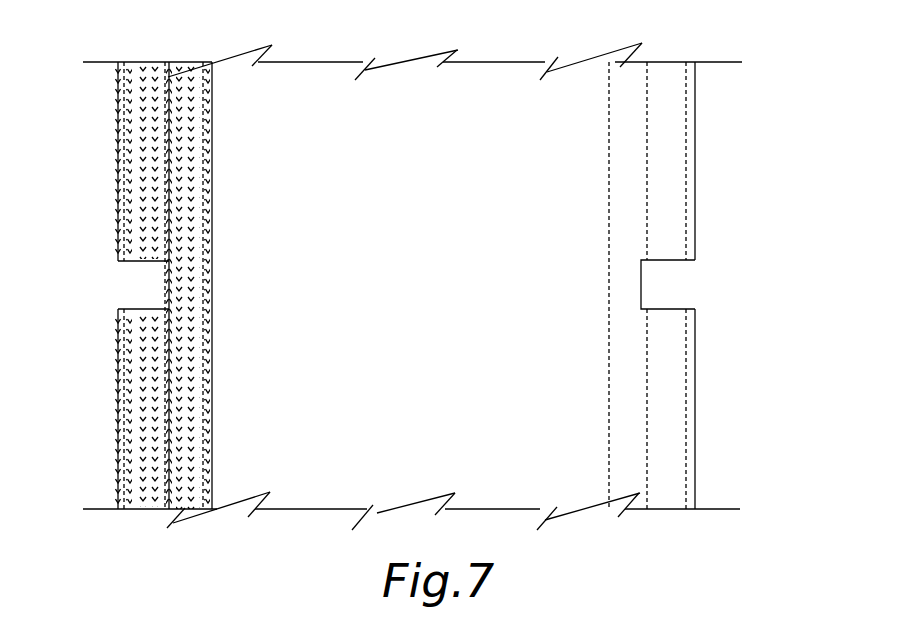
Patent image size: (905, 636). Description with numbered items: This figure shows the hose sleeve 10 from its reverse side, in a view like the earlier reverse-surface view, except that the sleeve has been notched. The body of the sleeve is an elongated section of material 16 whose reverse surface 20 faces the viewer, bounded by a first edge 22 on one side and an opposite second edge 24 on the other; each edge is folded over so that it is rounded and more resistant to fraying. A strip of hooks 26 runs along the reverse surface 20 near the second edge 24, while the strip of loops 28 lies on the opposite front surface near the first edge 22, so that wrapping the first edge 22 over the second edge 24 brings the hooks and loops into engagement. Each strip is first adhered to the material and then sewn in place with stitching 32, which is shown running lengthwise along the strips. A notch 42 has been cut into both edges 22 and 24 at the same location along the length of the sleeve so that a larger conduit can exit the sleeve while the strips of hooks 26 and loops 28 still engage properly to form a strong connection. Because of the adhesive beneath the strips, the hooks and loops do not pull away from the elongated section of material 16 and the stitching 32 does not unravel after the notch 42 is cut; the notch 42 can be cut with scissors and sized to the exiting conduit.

The hose sleeve 10 is at (112, 23).
The elongated section of material 16 is at (450, 95).
The reverse surface 20 is at (405, 305).
The first edge 22 is at (694, 424).
The second edge 24 is at (118, 405).
The strip of hooks 26 is at (135, 167).
The strip of loops 28 is at (667, 155).
The stitching 32 is at (168, 80).
The notch 42 is at (138, 261).